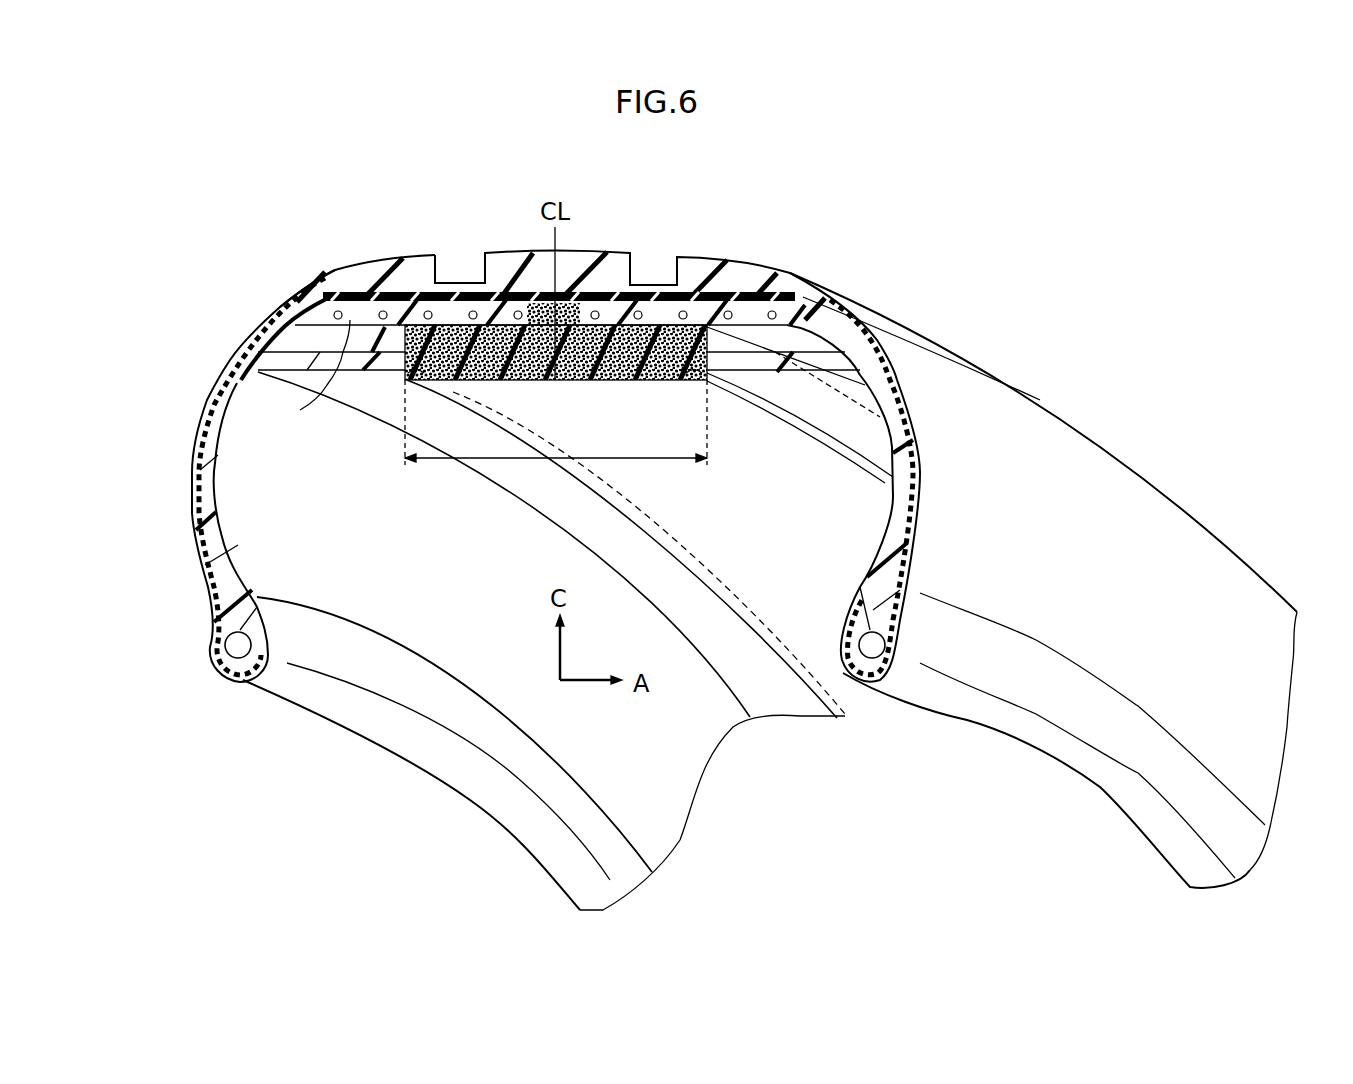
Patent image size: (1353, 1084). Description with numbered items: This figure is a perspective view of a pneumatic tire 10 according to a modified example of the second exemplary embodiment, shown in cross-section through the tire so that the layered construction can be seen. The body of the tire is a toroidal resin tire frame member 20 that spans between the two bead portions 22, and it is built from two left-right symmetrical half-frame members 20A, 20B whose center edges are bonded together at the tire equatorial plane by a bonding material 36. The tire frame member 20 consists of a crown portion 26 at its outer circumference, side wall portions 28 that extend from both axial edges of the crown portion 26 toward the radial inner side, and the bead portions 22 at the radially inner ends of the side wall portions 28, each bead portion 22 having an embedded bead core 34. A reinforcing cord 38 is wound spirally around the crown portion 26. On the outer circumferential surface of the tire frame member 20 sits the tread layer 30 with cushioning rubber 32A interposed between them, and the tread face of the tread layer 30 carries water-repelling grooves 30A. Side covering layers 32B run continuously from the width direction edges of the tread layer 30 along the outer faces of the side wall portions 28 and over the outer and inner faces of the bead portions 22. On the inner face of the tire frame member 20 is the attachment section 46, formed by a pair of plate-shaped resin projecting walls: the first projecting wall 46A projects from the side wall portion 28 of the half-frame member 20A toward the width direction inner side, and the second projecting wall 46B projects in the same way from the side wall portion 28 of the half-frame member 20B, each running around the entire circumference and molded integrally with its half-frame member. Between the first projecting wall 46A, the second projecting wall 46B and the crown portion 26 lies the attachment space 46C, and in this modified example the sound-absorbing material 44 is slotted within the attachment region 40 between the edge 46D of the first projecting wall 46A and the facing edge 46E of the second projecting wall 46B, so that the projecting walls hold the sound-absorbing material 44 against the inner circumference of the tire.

The pneumatic tire 10 is at (963, 323).
The tire frame member 20 is at (257, 343).
The half-frame member 20A is at (233, 378).
The half-frame member 20B is at (863, 353).
The bead portion 22 is at (230, 627).
The crown portion 26 is at (319, 379).
The side wall portion 28 is at (208, 488).
The tread layer 30 is at (413, 278).
The water-repelling groove 30A is at (453, 272).
The cushioning rubber 32A is at (712, 290).
The side covering layer 32B is at (192, 468).
The bead core 34 is at (238, 645).
The bonding material 36 is at (577, 313).
The reinforcing cord 38 is at (383, 310).
The attachment region 40 is at (536, 457).
The sound-absorbing material 44 is at (610, 380).
The attachment section 46 is at (559, 361).
The first projecting wall 46A is at (345, 362).
The second projecting wall 46B is at (748, 357).
The attachment space 46C is at (400, 349).
The edge of first projecting wall 46D is at (418, 371).
The edge of second projecting wall 46E is at (690, 363).